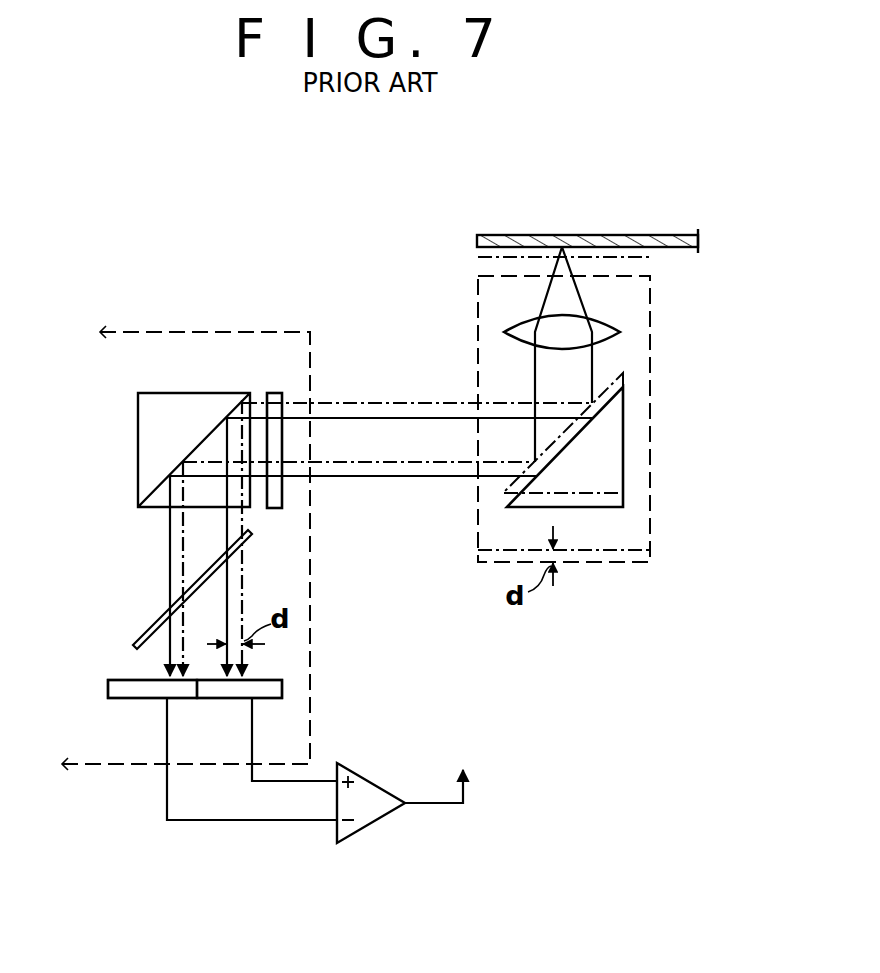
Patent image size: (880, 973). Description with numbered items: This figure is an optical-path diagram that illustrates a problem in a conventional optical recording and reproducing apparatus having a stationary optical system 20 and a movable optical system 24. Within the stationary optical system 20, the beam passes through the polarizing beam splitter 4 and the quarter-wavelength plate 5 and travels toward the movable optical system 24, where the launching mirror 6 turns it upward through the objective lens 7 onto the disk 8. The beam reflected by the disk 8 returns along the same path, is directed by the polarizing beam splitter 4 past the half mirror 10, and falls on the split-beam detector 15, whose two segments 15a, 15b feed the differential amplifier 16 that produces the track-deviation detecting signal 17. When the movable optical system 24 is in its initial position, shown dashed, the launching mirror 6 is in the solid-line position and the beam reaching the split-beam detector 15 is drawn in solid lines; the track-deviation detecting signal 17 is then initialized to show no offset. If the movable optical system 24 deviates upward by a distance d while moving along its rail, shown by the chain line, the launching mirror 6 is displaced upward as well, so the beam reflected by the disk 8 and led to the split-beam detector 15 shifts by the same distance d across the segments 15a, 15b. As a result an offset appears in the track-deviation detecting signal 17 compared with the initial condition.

The polarizing beam splitter 4 is at (201, 393).
The quarter-wavelength plate 5 is at (269, 393).
The launching mirror 6 is at (623, 433).
The objective lens 7 is at (620, 328).
The disk 8 is at (652, 233).
The half mirror 10 is at (252, 538).
The split-beam detector 15 is at (115, 675).
The detector segment 15a is at (282, 692).
The detector segment 15b is at (130, 698).
The differential amplifier 16 is at (390, 815).
The track-deviation detecting signal 17 is at (456, 776).
The stationary optical system 20 is at (307, 330).
The movable optical system 24 is at (651, 562).